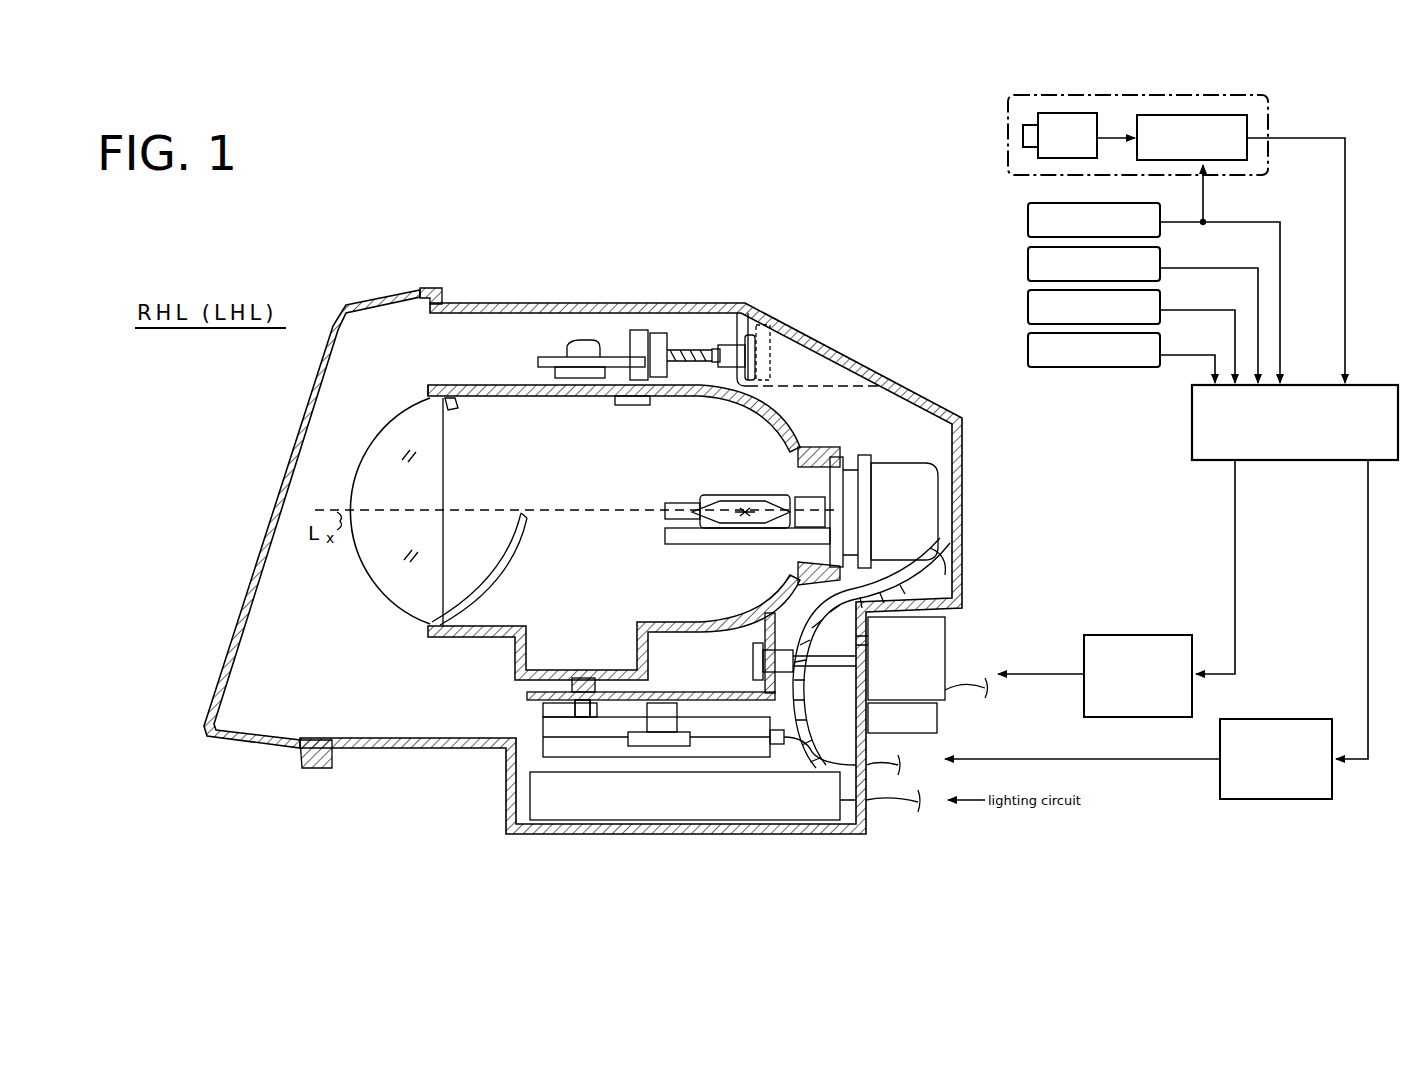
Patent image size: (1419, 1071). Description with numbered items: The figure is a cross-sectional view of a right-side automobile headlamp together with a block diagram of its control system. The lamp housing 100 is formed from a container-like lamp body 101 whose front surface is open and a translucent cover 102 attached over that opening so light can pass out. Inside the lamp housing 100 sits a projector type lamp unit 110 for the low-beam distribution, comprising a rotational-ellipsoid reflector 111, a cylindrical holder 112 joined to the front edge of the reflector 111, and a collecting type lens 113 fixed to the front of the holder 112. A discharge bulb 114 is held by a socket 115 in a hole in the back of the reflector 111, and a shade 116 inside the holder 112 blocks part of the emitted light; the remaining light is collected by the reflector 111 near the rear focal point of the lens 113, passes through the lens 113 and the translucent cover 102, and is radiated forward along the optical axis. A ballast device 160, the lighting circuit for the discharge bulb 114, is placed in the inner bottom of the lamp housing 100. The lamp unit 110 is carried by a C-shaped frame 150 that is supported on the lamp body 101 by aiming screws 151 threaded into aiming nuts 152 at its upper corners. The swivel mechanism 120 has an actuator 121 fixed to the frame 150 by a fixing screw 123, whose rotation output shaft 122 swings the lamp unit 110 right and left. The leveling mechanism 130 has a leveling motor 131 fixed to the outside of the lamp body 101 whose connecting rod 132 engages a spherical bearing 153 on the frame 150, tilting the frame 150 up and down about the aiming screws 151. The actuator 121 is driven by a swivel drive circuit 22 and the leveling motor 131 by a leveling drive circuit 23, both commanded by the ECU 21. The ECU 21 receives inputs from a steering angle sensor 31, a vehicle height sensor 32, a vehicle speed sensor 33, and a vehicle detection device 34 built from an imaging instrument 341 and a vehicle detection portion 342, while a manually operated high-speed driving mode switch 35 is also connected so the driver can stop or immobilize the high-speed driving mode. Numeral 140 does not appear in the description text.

The lamp housing 100 is at (485, 283).
The lamp body 101 is at (770, 330).
The translucent cover 102 is at (250, 522).
The lamp unit 110 is at (584, 465).
The reflector 111 is at (775, 425).
The holder 112 is at (480, 386).
The lens 113 is at (380, 462).
The discharge bulb 114 is at (748, 505).
The socket 115 is at (888, 490).
The shade 116 is at (514, 560).
The swivel mechanism 120 is at (663, 785).
The actuator 121 is at (650, 770).
The rotation output shaft 122 is at (582, 742).
The fixing screw 123 is at (662, 748).
The leveling mechanism 130 is at (941, 669).
The leveling motor 131 is at (935, 668).
The connecting rod 132 is at (878, 642).
The support frame 140 is at (566, 640).
The frame 150 is at (646, 298).
The aiming screw 151 is at (688, 345).
The aiming nut 152 is at (648, 345).
The spherical bearing 153 is at (790, 660).
The ballast device 160 is at (820, 805).
The electronic control unit 21 is at (1192, 429).
The swivel drive circuit 22 is at (1252, 719).
The leveling drive circuit 23 is at (1104, 635).
The steering angle sensor 31 is at (1028, 307).
The vehicle height sensor 32 is at (1028, 265).
The vehicle speed sensor 33 is at (1028, 222).
The vehicle detection device 34 is at (1162, 118).
The imaging instrument 341 is at (1062, 112).
The vehicle detection portion 342 is at (1167, 115).
The high-speed driving mode switch 35 is at (1028, 350).